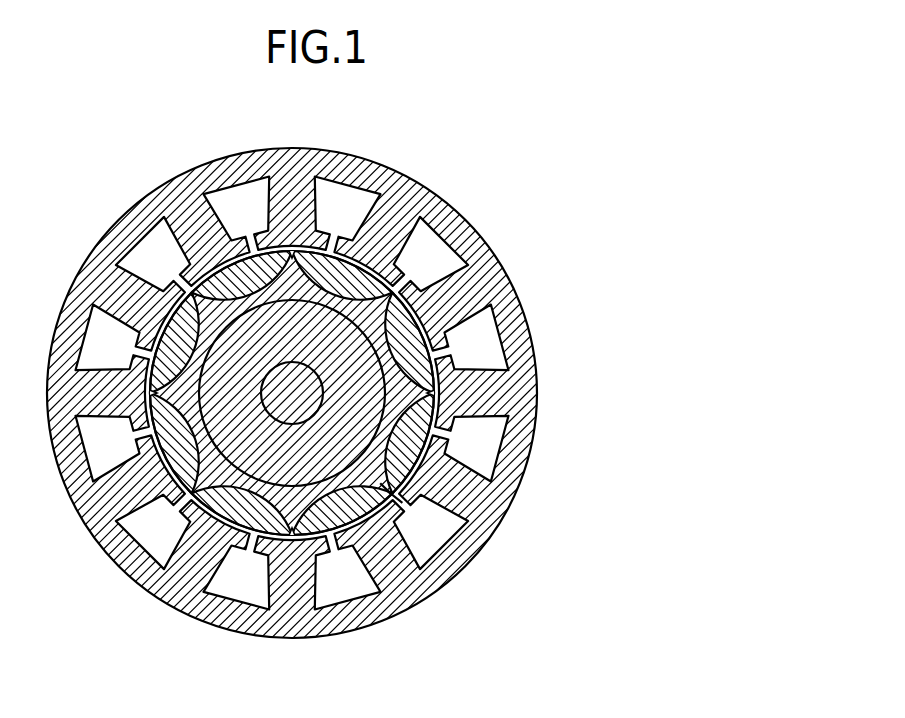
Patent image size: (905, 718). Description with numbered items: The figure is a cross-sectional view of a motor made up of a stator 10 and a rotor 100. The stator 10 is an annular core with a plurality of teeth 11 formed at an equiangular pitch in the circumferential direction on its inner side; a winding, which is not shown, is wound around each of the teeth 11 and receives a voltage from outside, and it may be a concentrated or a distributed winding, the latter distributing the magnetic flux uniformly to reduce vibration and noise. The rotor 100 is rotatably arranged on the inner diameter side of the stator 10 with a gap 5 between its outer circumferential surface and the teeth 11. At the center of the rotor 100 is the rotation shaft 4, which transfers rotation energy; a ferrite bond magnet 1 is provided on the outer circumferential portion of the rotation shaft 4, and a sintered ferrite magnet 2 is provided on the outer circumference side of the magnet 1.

The ferrite bond magnet 1 is at (387, 430).
The sintered ferrite magnet 2 is at (423, 364).
The rotation shaft 4 is at (297, 407).
The gap 5 is at (395, 497).
The stator 10 is at (410, 192).
The teeth 11 is at (372, 250).
The rotor 100 is at (413, 315).